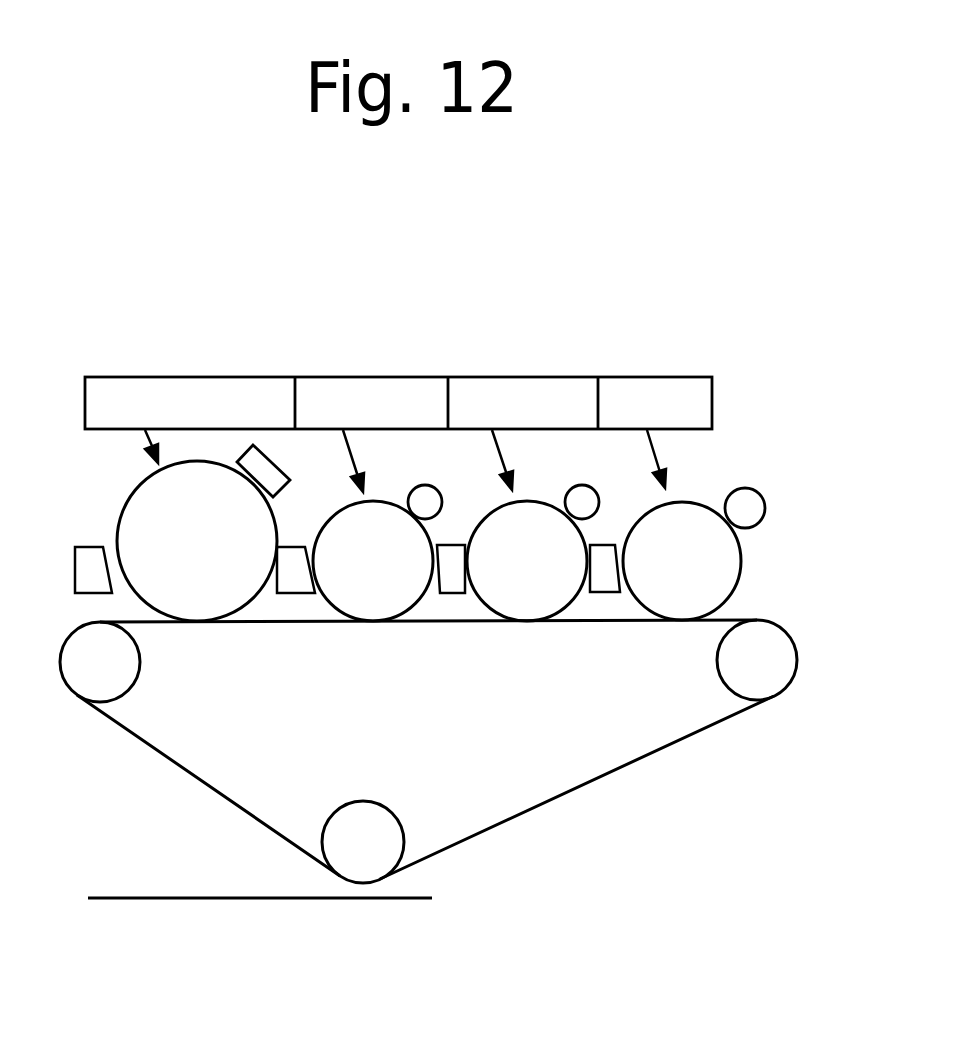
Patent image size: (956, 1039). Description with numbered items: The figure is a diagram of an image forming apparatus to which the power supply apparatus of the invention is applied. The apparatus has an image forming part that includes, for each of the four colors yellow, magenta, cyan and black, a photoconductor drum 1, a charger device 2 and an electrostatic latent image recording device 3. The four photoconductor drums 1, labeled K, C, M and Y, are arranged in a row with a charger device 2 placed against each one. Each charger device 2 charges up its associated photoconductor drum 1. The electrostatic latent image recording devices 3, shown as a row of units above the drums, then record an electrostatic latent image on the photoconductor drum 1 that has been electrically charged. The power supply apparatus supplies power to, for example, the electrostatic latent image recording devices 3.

The photoconductor drum 1 is at (230, 601).
The charger device 2 is at (283, 465).
The electrostatic latent image recording device 3 is at (618, 395).